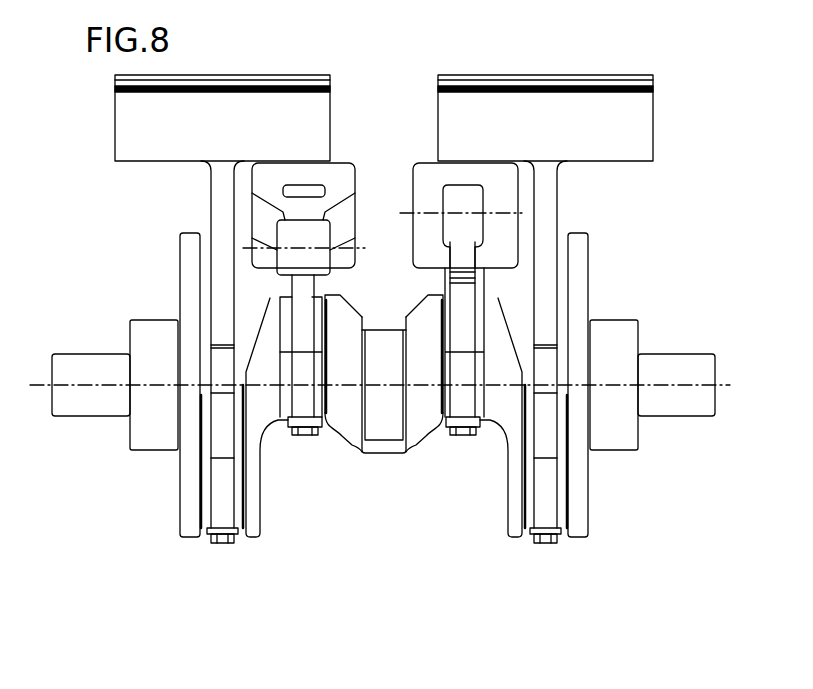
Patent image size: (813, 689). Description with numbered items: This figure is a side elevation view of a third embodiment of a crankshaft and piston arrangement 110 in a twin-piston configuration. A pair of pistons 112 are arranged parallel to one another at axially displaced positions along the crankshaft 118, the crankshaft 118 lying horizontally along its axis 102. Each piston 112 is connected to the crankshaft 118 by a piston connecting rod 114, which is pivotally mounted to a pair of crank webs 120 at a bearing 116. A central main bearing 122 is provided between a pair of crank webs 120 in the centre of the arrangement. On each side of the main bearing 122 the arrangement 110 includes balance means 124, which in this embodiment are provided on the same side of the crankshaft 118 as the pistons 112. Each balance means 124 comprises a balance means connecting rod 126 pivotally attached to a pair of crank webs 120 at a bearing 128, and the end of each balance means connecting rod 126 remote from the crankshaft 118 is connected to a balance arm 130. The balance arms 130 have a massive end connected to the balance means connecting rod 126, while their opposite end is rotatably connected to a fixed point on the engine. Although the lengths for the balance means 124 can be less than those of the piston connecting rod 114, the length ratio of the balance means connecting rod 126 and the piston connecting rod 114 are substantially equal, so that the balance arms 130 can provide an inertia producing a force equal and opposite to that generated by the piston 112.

The crankshaft axis 102 is at (722, 387).
The crankshaft and piston arrangement 110 is at (96, 240).
The piston 112 is at (125, 153).
The piston connecting rod 114 is at (220, 237).
The bearing 116 is at (133, 496).
The crankshaft 118 is at (93, 370).
The crank webs 120 is at (418, 430).
The central main bearing 122 is at (383, 317).
The balance means 124 is at (398, 132).
The balance means connecting rod 126 is at (302, 305).
The bearing 128 is at (325, 434).
The balance arm 130 is at (425, 187).